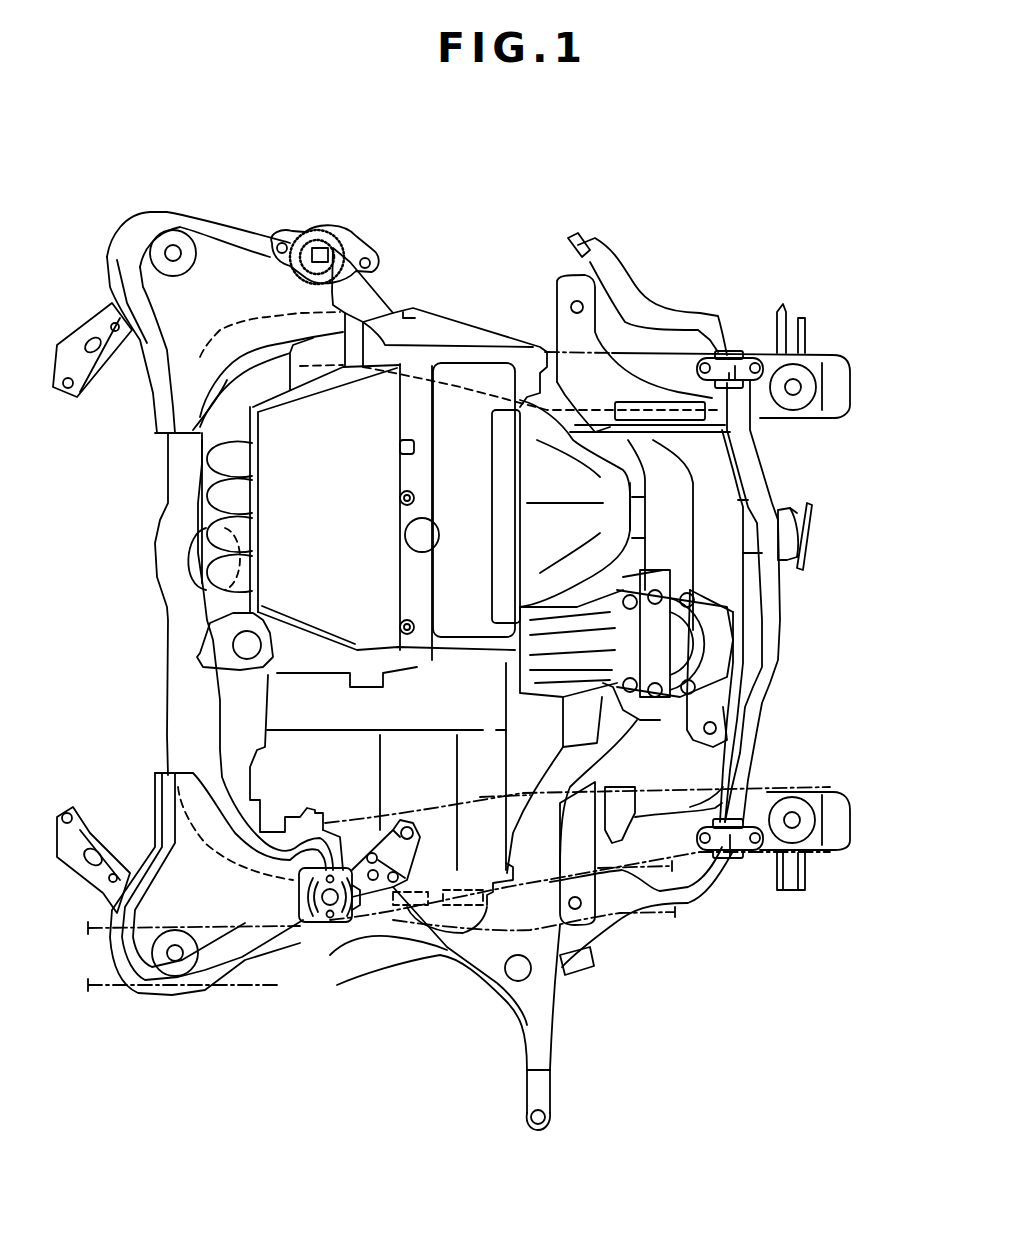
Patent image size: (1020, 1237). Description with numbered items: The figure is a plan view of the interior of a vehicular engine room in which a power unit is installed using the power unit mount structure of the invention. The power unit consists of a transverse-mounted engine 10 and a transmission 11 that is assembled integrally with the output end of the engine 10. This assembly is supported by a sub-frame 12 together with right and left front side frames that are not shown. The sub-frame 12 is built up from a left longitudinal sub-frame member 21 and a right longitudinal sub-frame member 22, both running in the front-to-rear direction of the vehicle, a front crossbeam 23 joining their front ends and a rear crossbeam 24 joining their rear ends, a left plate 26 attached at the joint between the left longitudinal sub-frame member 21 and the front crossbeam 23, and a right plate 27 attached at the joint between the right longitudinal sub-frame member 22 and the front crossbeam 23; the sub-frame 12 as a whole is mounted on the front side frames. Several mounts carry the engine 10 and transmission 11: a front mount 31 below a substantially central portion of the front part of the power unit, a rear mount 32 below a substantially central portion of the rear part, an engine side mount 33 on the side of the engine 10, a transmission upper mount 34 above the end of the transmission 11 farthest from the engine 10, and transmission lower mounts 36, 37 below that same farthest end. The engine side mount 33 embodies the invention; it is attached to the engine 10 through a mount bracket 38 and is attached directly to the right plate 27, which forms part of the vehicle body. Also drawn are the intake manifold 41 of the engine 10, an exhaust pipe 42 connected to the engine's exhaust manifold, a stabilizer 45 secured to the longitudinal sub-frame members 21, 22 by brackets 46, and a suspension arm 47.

The engine 10 is at (283, 541).
The transmission 11 is at (277, 770).
The sub-frame 12 is at (745, 590).
The left longitudinal sub-frame member 21 is at (632, 853).
The right longitudinal sub-frame member 22 is at (647, 355).
The front crossbeam 23 is at (165, 675).
The rear crossbeam 24 is at (710, 492).
The left plate 26 is at (233, 980).
The right plate 27 is at (213, 213).
The front mount 31 is at (180, 556).
The rear mount 32 is at (690, 650).
The engine side mount 33 is at (323, 228).
The transmission upper mount 34 is at (326, 925).
The transmission lower mount 36 is at (393, 905).
The transmission lower mount 37 is at (470, 905).
The mount bracket 38 is at (380, 292).
The intake manifold 41 is at (200, 480).
The exhaust pipe 42 is at (815, 538).
The stabilizer 45 is at (767, 717).
The brackets 46 is at (730, 352).
The suspension arm 47 is at (557, 1040).